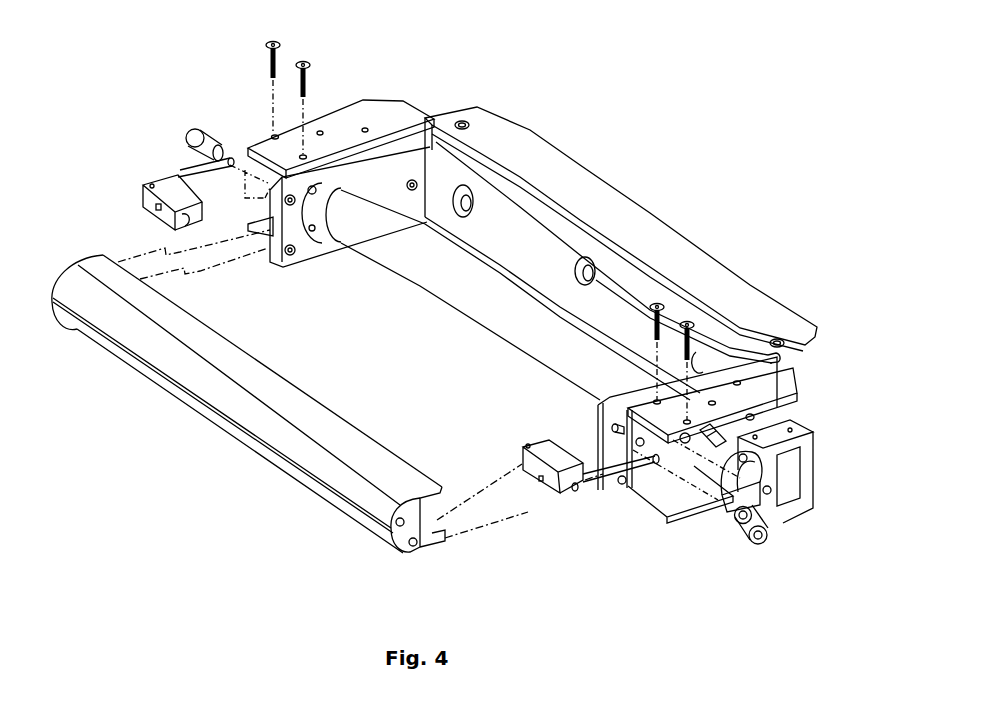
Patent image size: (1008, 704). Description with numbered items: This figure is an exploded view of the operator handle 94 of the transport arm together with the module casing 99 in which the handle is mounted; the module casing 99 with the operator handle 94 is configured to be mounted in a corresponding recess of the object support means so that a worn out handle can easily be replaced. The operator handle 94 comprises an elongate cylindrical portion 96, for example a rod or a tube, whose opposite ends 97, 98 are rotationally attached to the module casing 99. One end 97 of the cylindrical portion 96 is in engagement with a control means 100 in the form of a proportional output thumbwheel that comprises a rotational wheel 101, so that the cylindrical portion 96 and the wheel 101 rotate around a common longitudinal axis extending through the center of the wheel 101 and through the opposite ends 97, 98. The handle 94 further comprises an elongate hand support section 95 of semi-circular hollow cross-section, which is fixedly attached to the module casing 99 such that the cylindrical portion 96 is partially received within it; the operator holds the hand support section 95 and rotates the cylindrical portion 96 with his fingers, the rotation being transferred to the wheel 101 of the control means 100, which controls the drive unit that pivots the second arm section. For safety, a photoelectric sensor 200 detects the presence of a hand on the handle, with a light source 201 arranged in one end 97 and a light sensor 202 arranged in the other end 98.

The operator handle 94 is at (499, 486).
The hand support section 95 is at (248, 404).
The elongate cylindrical portion 96 is at (469, 299).
The end of the cylindrical portion 97 is at (611, 396).
The end of the cylindrical portion 98 is at (350, 210).
The module casing 99 is at (665, 198).
The control means 100 is at (770, 491).
The rotational wheel 101 is at (780, 466).
The photoelectric sensor 200 is at (170, 100).
The light source 201 is at (156, 157).
The light sensor 202 is at (574, 493).